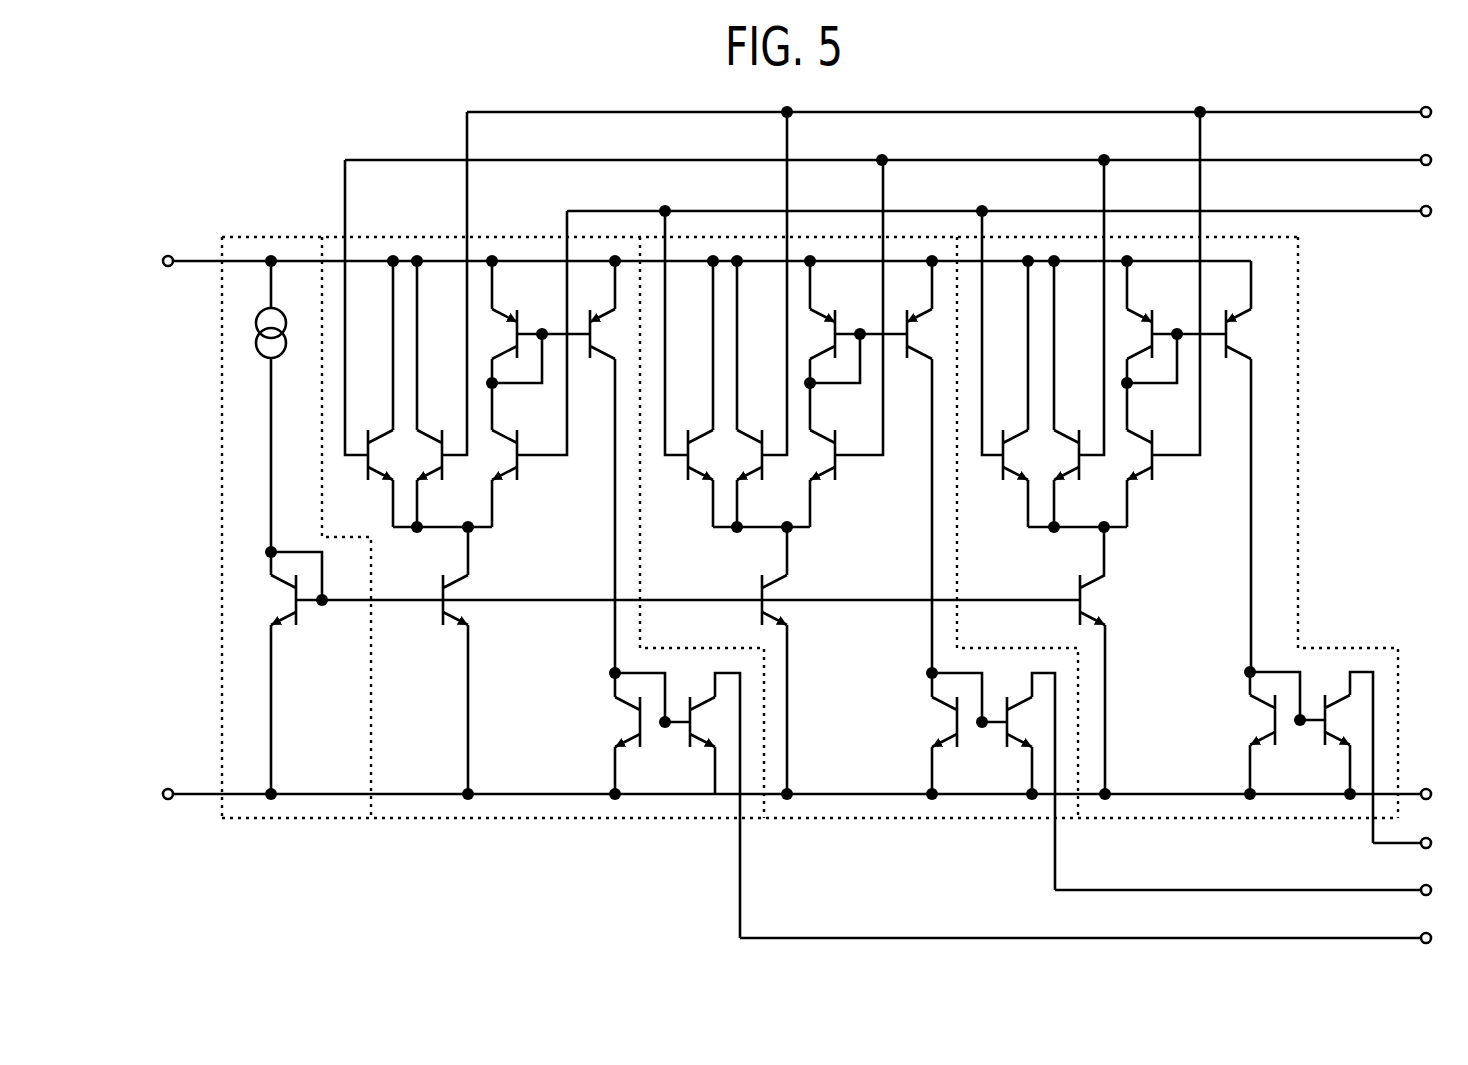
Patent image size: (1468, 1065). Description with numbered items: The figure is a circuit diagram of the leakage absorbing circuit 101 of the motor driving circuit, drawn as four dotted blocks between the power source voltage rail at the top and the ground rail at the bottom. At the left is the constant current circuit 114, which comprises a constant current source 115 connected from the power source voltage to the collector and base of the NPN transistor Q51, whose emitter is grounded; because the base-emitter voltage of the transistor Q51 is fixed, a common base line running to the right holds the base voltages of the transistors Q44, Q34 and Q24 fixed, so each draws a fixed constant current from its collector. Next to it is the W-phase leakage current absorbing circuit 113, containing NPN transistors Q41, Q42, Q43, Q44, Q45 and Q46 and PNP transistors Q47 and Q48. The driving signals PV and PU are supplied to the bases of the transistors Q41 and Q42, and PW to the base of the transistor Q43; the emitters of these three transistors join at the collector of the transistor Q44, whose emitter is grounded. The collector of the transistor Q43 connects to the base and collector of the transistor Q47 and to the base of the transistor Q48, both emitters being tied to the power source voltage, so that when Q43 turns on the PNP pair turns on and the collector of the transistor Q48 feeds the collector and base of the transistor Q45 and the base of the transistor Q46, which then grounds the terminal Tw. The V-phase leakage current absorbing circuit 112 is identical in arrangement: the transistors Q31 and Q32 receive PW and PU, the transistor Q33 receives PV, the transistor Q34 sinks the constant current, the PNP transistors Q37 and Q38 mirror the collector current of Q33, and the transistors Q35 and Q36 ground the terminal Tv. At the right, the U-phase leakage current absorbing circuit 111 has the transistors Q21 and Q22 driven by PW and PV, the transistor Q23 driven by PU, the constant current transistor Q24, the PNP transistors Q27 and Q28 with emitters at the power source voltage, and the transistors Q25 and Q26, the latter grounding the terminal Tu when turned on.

The leakage absorbing circuit 101 is at (206, 86).
The U-phase leakage current absorbing circuit 111 is at (1162, 820).
The V-phase leakage current absorbing circuit 112 is at (858, 820).
The W-phase leakage current absorbing circuit 113 is at (545, 820).
The constant current circuit 114 is at (233, 820).
The constant current source 115 is at (256, 340).
The NPN transistor Q51 is at (296, 673).
The NPN transistor Q41 is at (369, 343).
The NPN transistor Q42 is at (442, 319).
The NPN transistor Q43 is at (529, 369).
The NPN transistor Q44 is at (478, 681).
The NPN transistor Q45 is at (641, 733).
The NPN transistor Q46 is at (702, 805).
The PNP transistor Q47 is at (538, 325).
The PNP transistor Q48 is at (596, 467).
The NPN transistor Q31 is at (689, 369).
The NPN transistor Q32 is at (762, 319).
The NPN transistor Q33 is at (846, 343).
The NPN transistor Q34 is at (799, 681).
The NPN transistor Q35 is at (957, 733).
The NPN transistor Q36 is at (1018, 781).
The PNP transistor Q37 is at (855, 325).
The PNP transistor Q38 is at (914, 467).
The NPN transistor Q21 is at (1005, 369).
The NPN transistor Q22 is at (1079, 343).
The NPN transistor Q23 is at (1163, 319).
The NPN transistor Q24 is at (1104, 687).
The NPN transistor Q25 is at (1271, 733).
The NPN transistor Q26 is at (1332, 757).
The PNP transistor Q27 is at (1173, 325).
The PNP transistor Q28 is at (1249, 466).